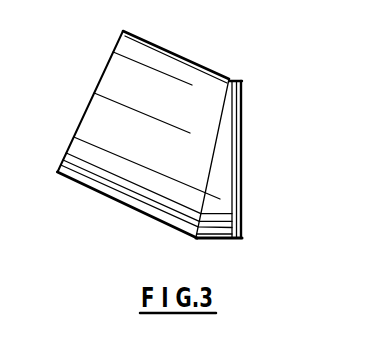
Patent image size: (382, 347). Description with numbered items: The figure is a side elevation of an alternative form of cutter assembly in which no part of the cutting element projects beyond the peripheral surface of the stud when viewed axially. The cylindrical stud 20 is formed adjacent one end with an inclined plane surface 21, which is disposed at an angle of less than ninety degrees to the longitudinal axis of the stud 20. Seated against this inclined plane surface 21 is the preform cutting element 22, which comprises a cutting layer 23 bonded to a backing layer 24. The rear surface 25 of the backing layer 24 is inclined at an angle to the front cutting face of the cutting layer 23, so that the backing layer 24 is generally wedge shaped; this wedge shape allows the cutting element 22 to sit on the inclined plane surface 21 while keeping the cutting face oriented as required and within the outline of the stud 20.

The cylindrical stud 20 is at (188, 80).
The inclined plane surface 21 is at (230, 97).
The preform cutting element 22 is at (241, 183).
The cutting layer 23 is at (243, 233).
The backing layer 24 is at (191, 224).
The rear surface 25 is at (219, 135).